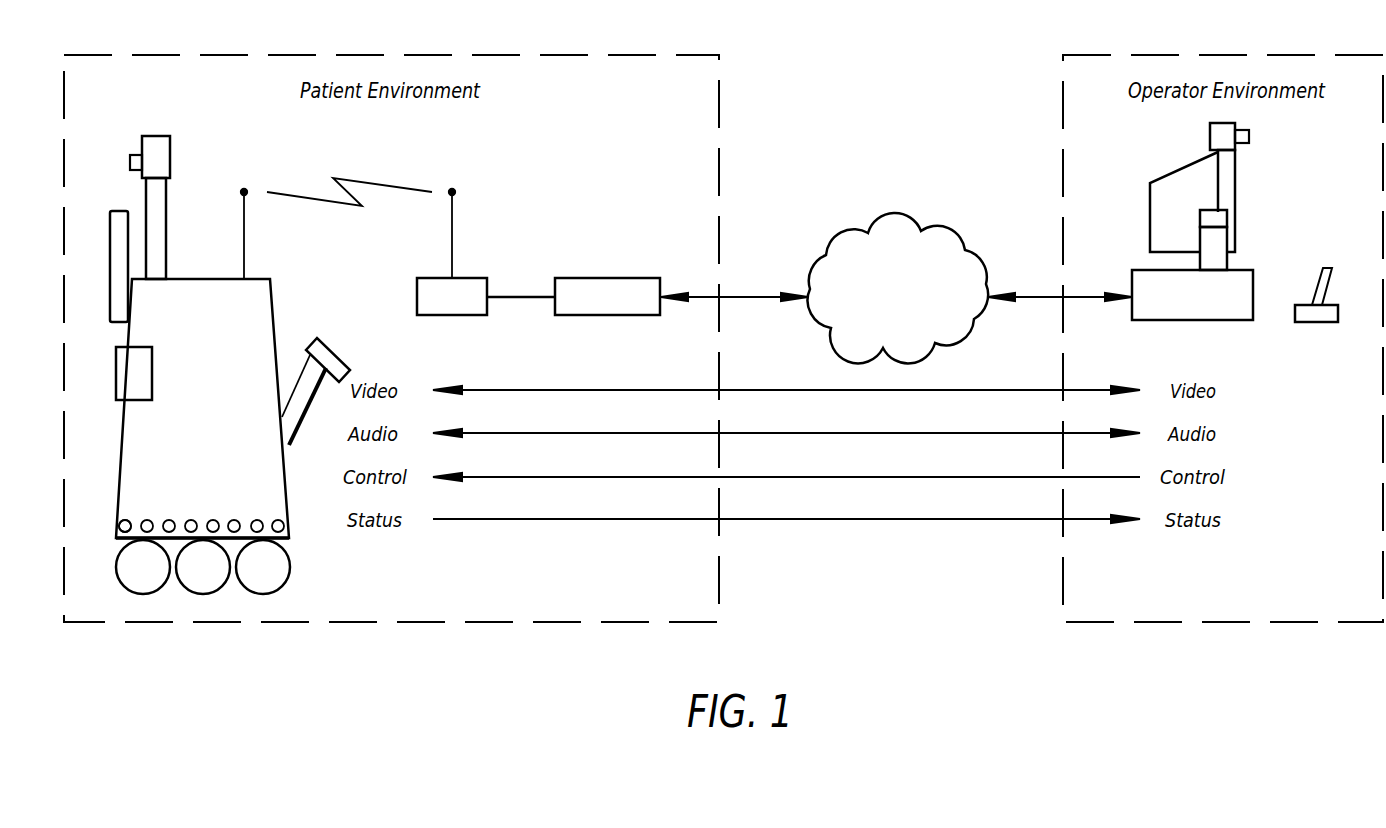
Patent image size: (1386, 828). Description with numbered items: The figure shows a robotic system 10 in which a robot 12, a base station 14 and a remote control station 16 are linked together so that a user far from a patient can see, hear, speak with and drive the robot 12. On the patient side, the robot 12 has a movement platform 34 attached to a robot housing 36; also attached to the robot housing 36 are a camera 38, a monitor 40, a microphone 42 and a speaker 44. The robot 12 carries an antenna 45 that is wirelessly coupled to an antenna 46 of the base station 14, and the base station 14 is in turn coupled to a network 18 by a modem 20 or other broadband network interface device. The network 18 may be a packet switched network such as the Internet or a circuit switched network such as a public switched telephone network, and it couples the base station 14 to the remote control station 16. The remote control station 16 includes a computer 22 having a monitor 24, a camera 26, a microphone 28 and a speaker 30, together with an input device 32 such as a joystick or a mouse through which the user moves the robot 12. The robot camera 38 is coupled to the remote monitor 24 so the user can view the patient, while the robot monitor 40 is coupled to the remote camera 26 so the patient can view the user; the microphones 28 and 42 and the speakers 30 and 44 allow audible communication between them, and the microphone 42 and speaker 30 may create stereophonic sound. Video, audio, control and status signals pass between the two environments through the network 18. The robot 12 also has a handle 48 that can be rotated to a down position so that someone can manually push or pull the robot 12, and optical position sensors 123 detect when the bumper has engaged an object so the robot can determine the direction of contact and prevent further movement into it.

The robotic system 10 is at (896, 81).
The robot 12 is at (253, 333).
The base station 14 is at (468, 278).
The remote control station 16 is at (1157, 225).
The network 18 is at (898, 288).
The modem 20 is at (607, 278).
The computer 22 is at (1227, 315).
The monitor 24 is at (1228, 177).
The camera 26 is at (1213, 132).
The microphone 28 is at (1210, 212).
The speaker 30 is at (1223, 262).
The input device 32 is at (1328, 313).
The movement platform 34 is at (267, 570).
The robot housing 36 is at (157, 496).
The camera 38 is at (165, 168).
The monitor 40 is at (118, 253).
The microphone 42 is at (157, 143).
The speaker 44 is at (127, 380).
The antenna 45 is at (244, 190).
The antenna 46 is at (452, 190).
The handle 48 is at (327, 358).
The optical position sensors 123 is at (125, 520).